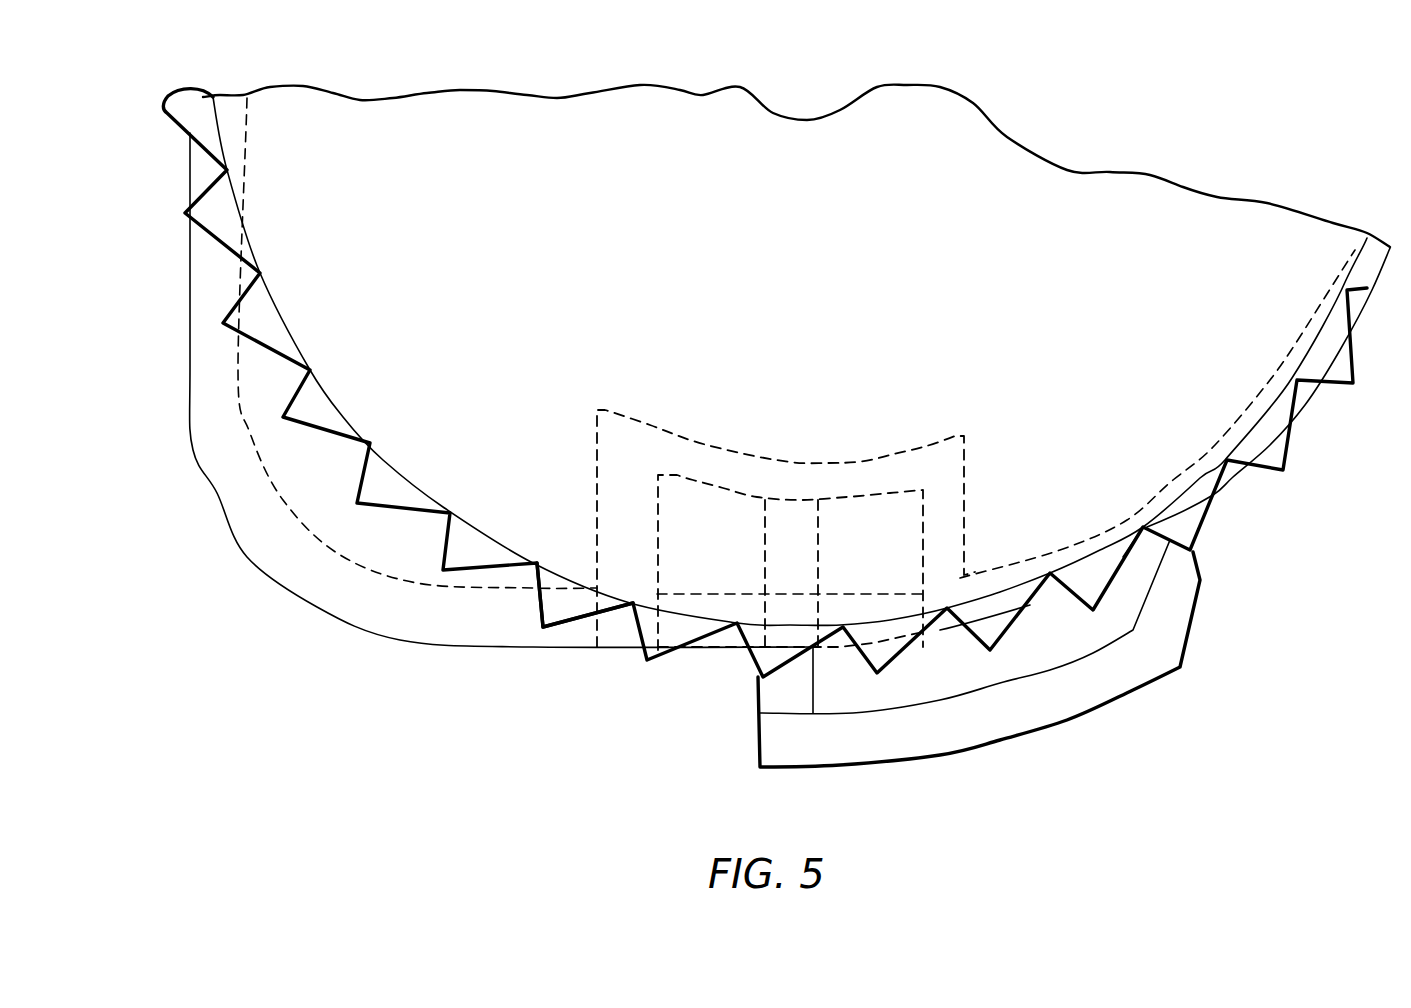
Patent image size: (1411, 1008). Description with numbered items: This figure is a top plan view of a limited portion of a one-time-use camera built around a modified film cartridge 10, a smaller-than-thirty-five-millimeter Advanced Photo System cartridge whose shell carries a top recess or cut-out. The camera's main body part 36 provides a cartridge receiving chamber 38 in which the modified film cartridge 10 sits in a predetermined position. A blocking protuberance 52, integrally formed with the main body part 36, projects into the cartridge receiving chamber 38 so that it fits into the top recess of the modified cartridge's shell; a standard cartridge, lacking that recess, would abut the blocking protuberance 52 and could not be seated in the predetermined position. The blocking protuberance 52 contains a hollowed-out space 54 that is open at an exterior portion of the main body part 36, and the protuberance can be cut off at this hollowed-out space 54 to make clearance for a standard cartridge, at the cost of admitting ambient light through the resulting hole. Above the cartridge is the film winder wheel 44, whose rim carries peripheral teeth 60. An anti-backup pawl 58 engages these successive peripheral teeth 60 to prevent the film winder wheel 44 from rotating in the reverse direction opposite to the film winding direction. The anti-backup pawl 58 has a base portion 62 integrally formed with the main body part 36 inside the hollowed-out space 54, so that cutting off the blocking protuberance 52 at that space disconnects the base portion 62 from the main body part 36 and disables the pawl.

The modified film cartridge 10 is at (253, 413).
The main body part 36 is at (340, 597).
The cartridge receiving chamber 38 is at (320, 525).
The film winder wheel 44 is at (612, 138).
The blocking protuberance 52 is at (597, 410).
The hollowed-out space 54 is at (673, 500).
The anti-backup pawl 58 is at (973, 730).
The peripheral teeth 60 is at (541, 627).
The base portion 62 is at (788, 523).